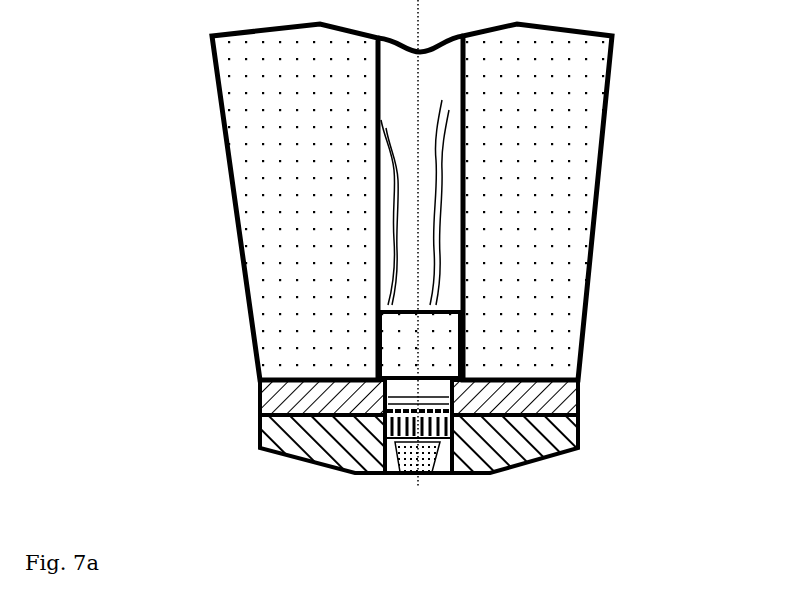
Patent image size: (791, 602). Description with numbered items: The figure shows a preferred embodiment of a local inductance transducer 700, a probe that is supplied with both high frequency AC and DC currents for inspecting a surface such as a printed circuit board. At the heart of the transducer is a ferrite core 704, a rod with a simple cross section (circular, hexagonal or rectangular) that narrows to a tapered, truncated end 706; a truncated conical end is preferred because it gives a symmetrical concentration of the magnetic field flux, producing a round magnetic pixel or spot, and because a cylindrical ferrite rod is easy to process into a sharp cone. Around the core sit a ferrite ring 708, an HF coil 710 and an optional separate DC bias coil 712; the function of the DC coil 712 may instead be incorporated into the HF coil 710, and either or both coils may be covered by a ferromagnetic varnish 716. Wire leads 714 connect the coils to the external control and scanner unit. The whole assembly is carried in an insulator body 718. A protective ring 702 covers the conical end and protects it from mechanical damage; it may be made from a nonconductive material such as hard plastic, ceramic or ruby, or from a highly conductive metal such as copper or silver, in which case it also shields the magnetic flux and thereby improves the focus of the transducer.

The local inductance transducer 700 is at (600, 265).
The protective ring 702 is at (250, 445).
The ferrite core 704 is at (317, 392).
The truncated end 706 is at (404, 490).
The ferrite ring 708 is at (402, 442).
The HF coil 710 is at (410, 428).
The DC bias coil 712 is at (413, 394).
The wire leads 714 is at (402, 252).
The ferromagnetic varnish 716 is at (445, 423).
The insulator body 718 is at (295, 112).